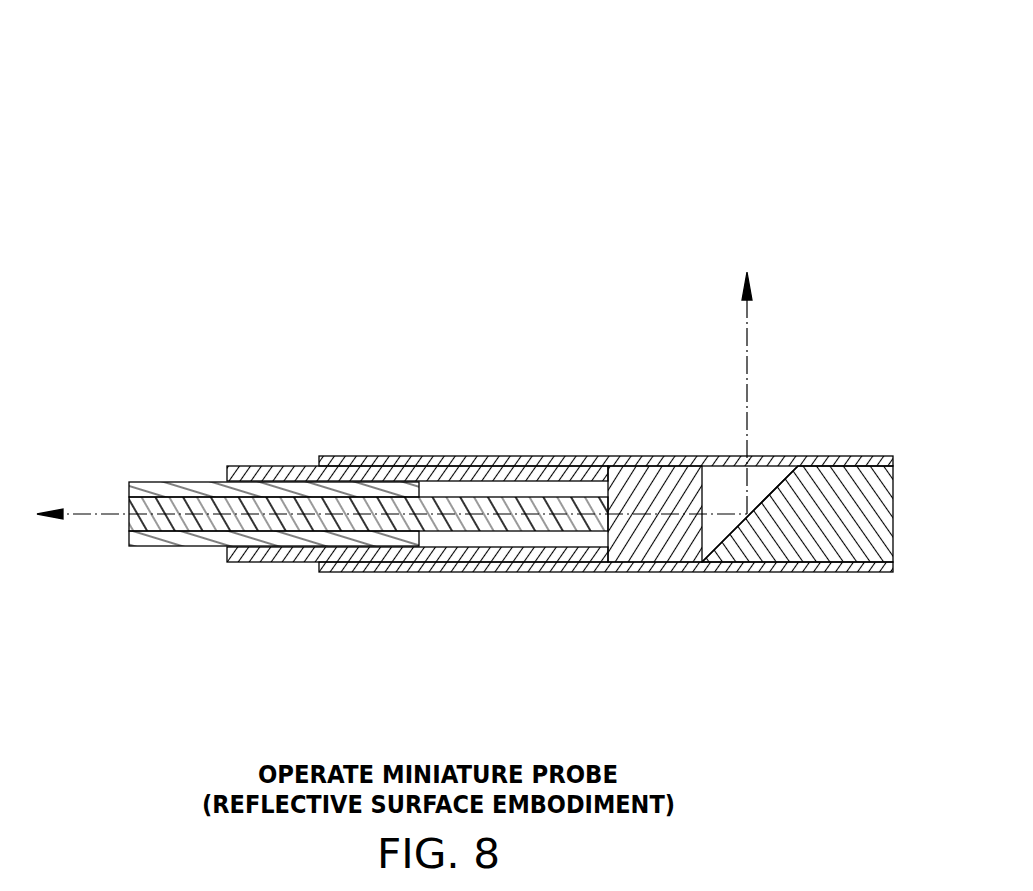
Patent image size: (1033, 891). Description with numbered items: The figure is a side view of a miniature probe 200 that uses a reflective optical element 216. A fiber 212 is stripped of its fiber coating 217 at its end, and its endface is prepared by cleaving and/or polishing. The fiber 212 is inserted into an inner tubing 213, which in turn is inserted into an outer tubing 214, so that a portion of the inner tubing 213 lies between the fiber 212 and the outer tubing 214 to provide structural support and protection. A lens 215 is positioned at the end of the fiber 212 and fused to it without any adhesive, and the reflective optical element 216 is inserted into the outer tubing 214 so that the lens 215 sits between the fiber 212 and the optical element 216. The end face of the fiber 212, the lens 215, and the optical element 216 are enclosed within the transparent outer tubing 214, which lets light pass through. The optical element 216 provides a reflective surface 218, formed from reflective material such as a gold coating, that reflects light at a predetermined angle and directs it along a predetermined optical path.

The miniature probe 200 is at (208, 180).
The fiber 212 is at (271, 515).
The inner tubing 213 is at (448, 472).
The outer tubing 214 is at (518, 562).
The lens 215 is at (650, 484).
The reflective optical element 216 is at (810, 540).
The fiber coating 217 is at (190, 482).
The reflective surface 218 is at (758, 478).